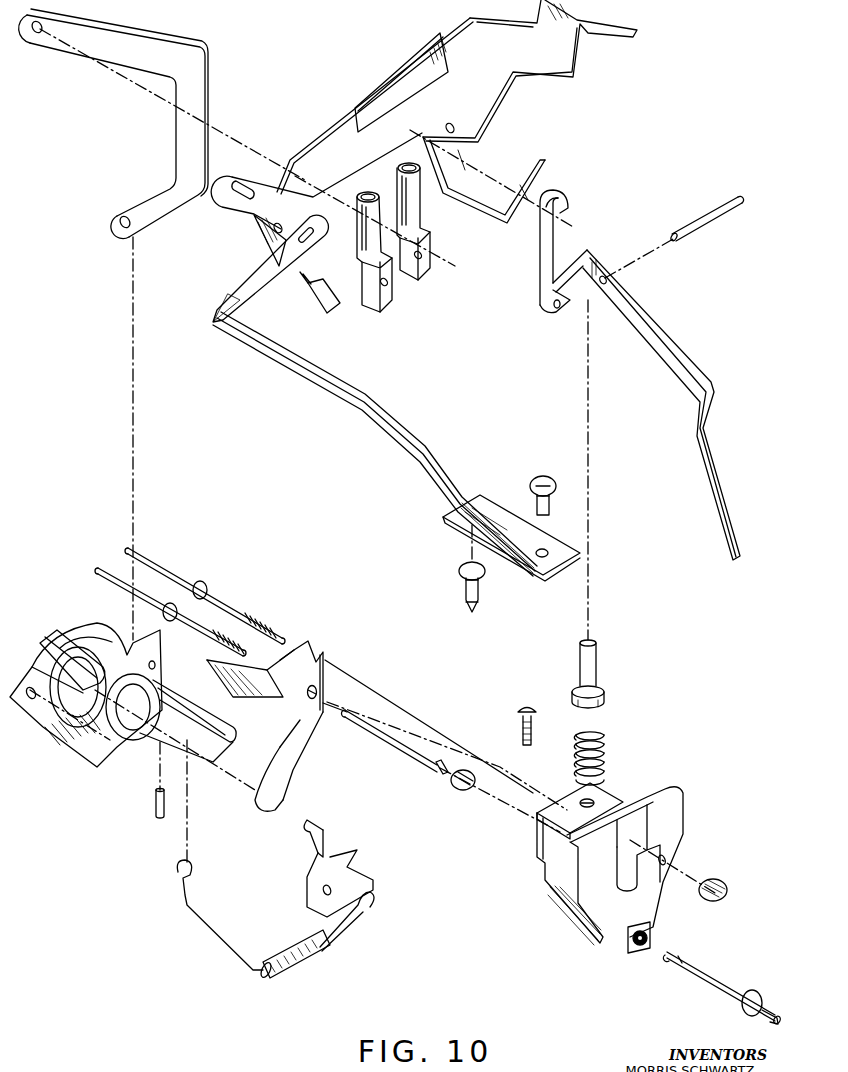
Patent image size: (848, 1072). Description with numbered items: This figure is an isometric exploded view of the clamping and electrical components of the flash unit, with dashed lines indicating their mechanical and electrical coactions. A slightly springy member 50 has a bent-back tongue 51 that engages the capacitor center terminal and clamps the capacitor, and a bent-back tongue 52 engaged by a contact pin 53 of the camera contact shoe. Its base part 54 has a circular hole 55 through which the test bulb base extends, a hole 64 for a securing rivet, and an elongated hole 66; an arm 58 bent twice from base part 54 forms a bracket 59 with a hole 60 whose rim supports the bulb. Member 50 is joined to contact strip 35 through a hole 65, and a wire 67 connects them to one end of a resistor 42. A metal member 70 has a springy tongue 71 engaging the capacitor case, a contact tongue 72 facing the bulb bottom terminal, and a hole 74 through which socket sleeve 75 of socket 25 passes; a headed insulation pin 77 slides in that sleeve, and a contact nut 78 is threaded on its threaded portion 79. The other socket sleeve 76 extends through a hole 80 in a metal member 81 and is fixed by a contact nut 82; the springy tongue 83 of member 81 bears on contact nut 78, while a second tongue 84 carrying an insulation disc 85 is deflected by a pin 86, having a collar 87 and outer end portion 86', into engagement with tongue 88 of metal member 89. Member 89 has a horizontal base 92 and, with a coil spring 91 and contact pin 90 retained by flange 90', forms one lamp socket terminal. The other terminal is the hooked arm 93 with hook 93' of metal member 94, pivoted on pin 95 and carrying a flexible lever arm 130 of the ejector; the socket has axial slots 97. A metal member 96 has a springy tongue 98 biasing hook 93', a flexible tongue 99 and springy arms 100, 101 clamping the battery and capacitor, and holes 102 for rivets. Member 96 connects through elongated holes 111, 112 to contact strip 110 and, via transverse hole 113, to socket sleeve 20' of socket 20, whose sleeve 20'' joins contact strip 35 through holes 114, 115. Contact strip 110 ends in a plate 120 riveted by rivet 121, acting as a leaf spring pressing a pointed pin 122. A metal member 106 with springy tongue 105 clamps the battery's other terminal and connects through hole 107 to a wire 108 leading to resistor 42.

The contact strip 35 is at (165, 50).
The hole 115 is at (37, 33).
The hole 65 is at (122, 228).
The contact strip 110 is at (300, 386).
The elongated hole 111 is at (232, 204).
The elongated hole 112 is at (312, 243).
The holes 102 is at (274, 230).
The springy arm 101 is at (322, 305).
The socket 20 is at (421, 302).
The socket sleeve 20' is at (359, 252).
The socket sleeve 20'' is at (439, 221).
The transverse hole 113 is at (387, 290).
The hole 114 is at (424, 256).
The metal member 96 is at (333, 128).
The axial slots 97 is at (312, 158).
The springy tongue 98 is at (393, 90).
The flexible tongue 99 is at (590, 30).
The springy arm 100 is at (493, 163).
The hooked arm 93 is at (539, 251).
The hook 93' is at (579, 190).
The metal member 94 is at (608, 255).
The lever arm 130 is at (698, 388).
The pivot pin 95 is at (705, 222).
The plate 120 is at (520, 518).
The rivet 121 is at (549, 503).
The pointed pin 122 is at (468, 595).
The socket 25 is at (113, 548).
The socket sleeve 76 is at (160, 568).
The socket sleeve 75 is at (98, 571).
The threaded portion 79 is at (262, 626).
The member 50 is at (93, 778).
The bent-back tongue 51 is at (53, 640).
The base part 54 is at (97, 628).
The hole 64 is at (25, 690).
The circular hole 55 is at (52, 706).
The hole 60 is at (145, 705).
The hole 66 is at (157, 666).
The bent-back tongue 52 is at (225, 730).
The arm 58 is at (65, 752).
The bracket 59 is at (125, 748).
The contact pin 53 is at (156, 806).
The metal member 70 is at (340, 668).
The springy tongue 71 is at (250, 665).
The hole 74 is at (318, 690).
The springy contact tongue 72 is at (295, 756).
The headed insulation pin 77 is at (392, 740).
The contact nut 78 is at (452, 786).
The metal member 106 is at (350, 880).
The springy tongue 105 is at (318, 828).
The hole 107 is at (320, 890).
The wire 108 is at (348, 930).
The resistor 42 is at (305, 960).
The wire 67 is at (207, 925).
The contact pin 90 is at (610, 663).
The flange 90' is at (565, 689).
The coil spring 91 is at (604, 750).
The horizontal base 92 is at (582, 800).
The metal member 89 is at (615, 793).
The metal member 81 is at (690, 808).
The springy tongue 83 is at (630, 885).
The hole 80 is at (668, 858).
The contact nut 82 is at (716, 880).
The springy contact tongue 84 is at (658, 915).
The springy contact tongue 88 is at (582, 940).
The insulation disc 85 is at (642, 952).
The pin 86 is at (716, 986).
The collar 87 is at (752, 990).
The outer end portion 86' is at (746, 1027).